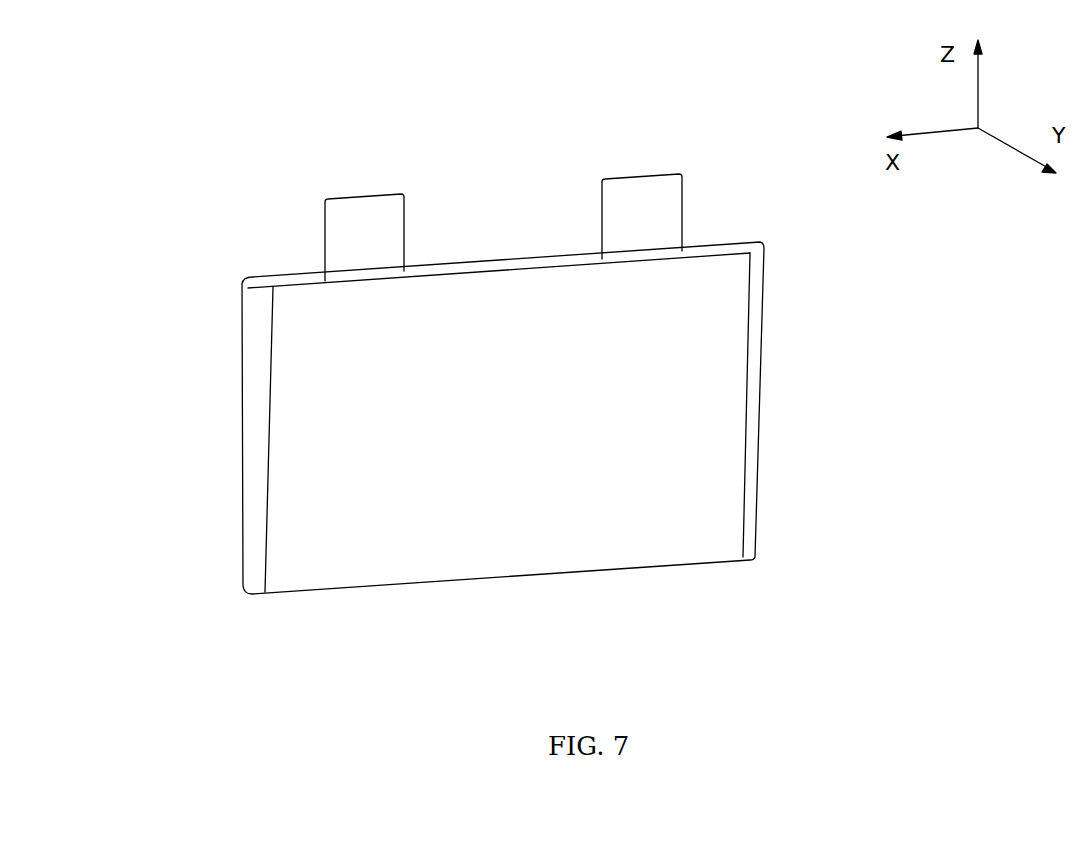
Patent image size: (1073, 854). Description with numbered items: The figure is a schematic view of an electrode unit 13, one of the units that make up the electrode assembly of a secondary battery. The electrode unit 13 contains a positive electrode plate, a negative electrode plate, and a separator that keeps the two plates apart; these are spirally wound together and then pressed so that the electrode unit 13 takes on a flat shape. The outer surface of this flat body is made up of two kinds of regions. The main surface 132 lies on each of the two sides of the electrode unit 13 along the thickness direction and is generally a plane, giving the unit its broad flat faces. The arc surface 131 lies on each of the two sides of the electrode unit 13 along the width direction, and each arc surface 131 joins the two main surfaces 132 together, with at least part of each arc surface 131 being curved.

The electrode unit 13 is at (483, 398).
The arc surface 131 is at (250, 453).
The main surface 132 is at (495, 547).